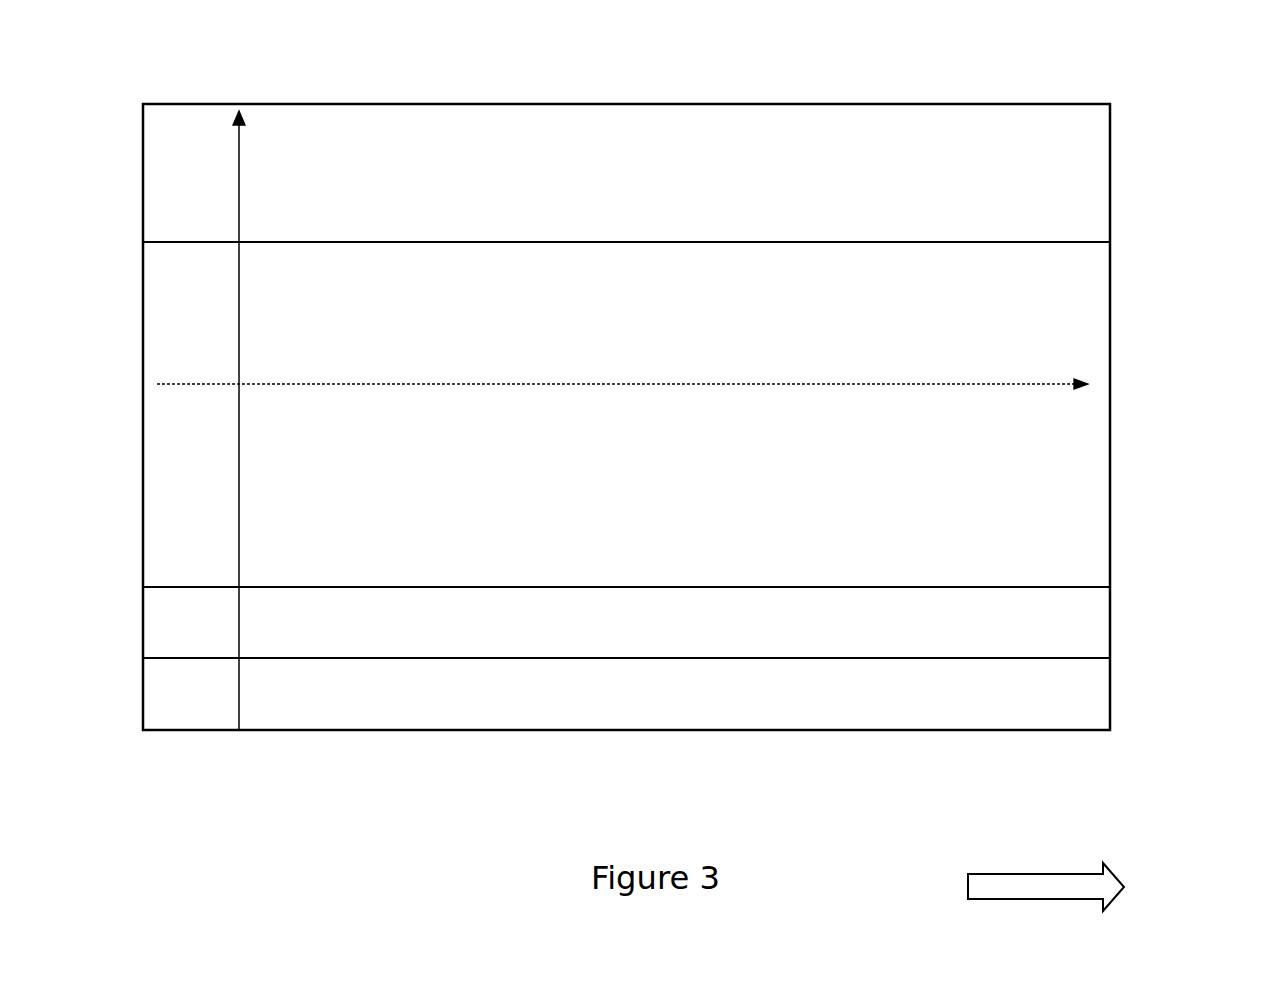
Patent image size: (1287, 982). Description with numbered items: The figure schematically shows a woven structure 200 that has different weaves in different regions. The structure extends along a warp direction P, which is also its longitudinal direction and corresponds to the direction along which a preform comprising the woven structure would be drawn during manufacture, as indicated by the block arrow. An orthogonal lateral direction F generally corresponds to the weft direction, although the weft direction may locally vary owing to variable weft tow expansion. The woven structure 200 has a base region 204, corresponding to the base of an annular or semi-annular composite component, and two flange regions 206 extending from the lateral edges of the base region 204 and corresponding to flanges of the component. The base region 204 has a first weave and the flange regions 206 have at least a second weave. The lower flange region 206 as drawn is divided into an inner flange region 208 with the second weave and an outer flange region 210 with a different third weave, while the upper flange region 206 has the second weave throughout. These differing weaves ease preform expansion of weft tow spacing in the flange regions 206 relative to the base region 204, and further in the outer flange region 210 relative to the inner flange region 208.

The woven structure 200 is at (96, 31).
The base region 204 is at (1136, 242).
The flange regions 206 is at (1136, 111).
The inner flange region 208 is at (1136, 597).
The outer flange region 210 is at (1136, 665).
The lateral direction F is at (239, 310).
The warp direction P is at (477, 384).